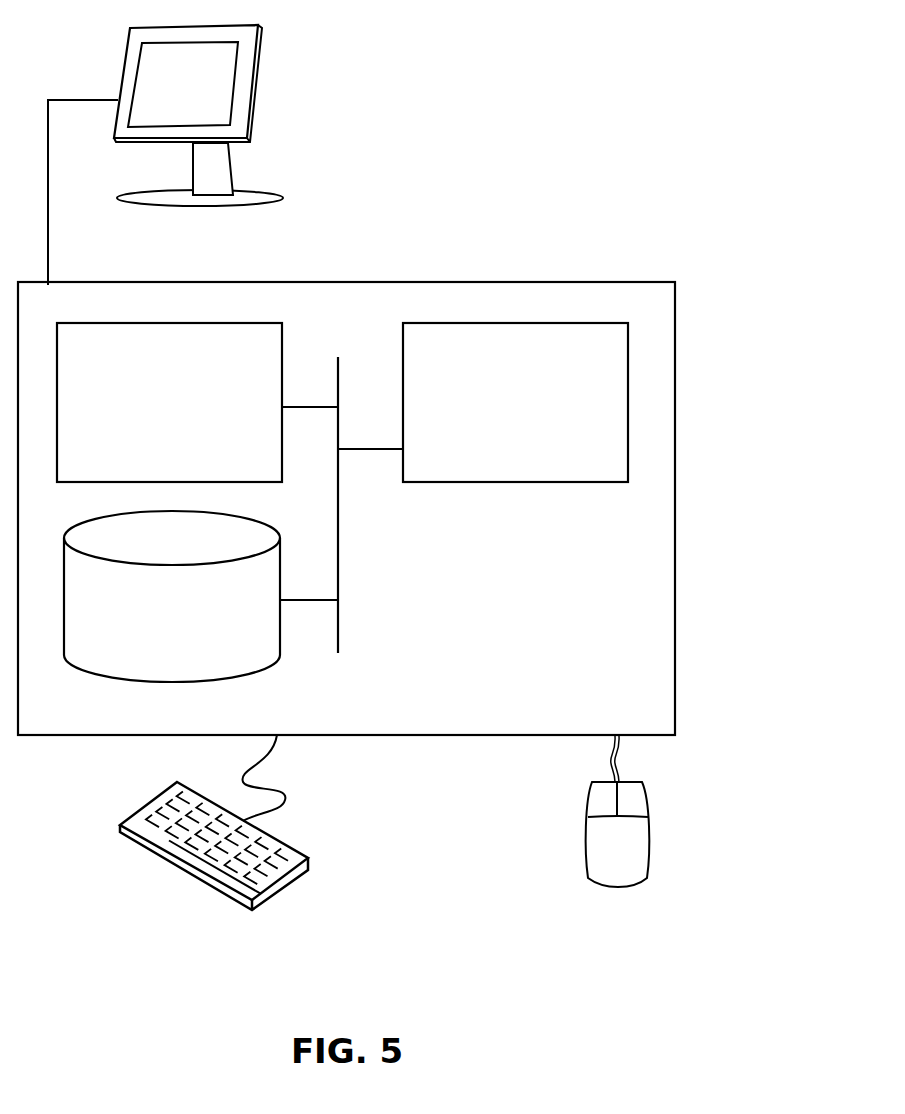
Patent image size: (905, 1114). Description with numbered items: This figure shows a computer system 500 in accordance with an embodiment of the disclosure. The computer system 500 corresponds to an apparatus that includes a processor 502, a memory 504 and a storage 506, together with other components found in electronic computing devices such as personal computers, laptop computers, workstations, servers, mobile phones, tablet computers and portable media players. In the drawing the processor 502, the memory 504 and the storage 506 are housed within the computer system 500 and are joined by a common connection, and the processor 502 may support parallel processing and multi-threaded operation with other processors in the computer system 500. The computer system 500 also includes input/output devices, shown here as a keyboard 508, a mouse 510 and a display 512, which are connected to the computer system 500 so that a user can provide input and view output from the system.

The computer system 500 is at (393, 258).
The processor 502 is at (499, 415).
The memory 504 is at (149, 413).
The storage 506 is at (156, 627).
The keyboard 508 is at (140, 843).
The mouse 510 is at (597, 857).
The display 512 is at (165, 155).